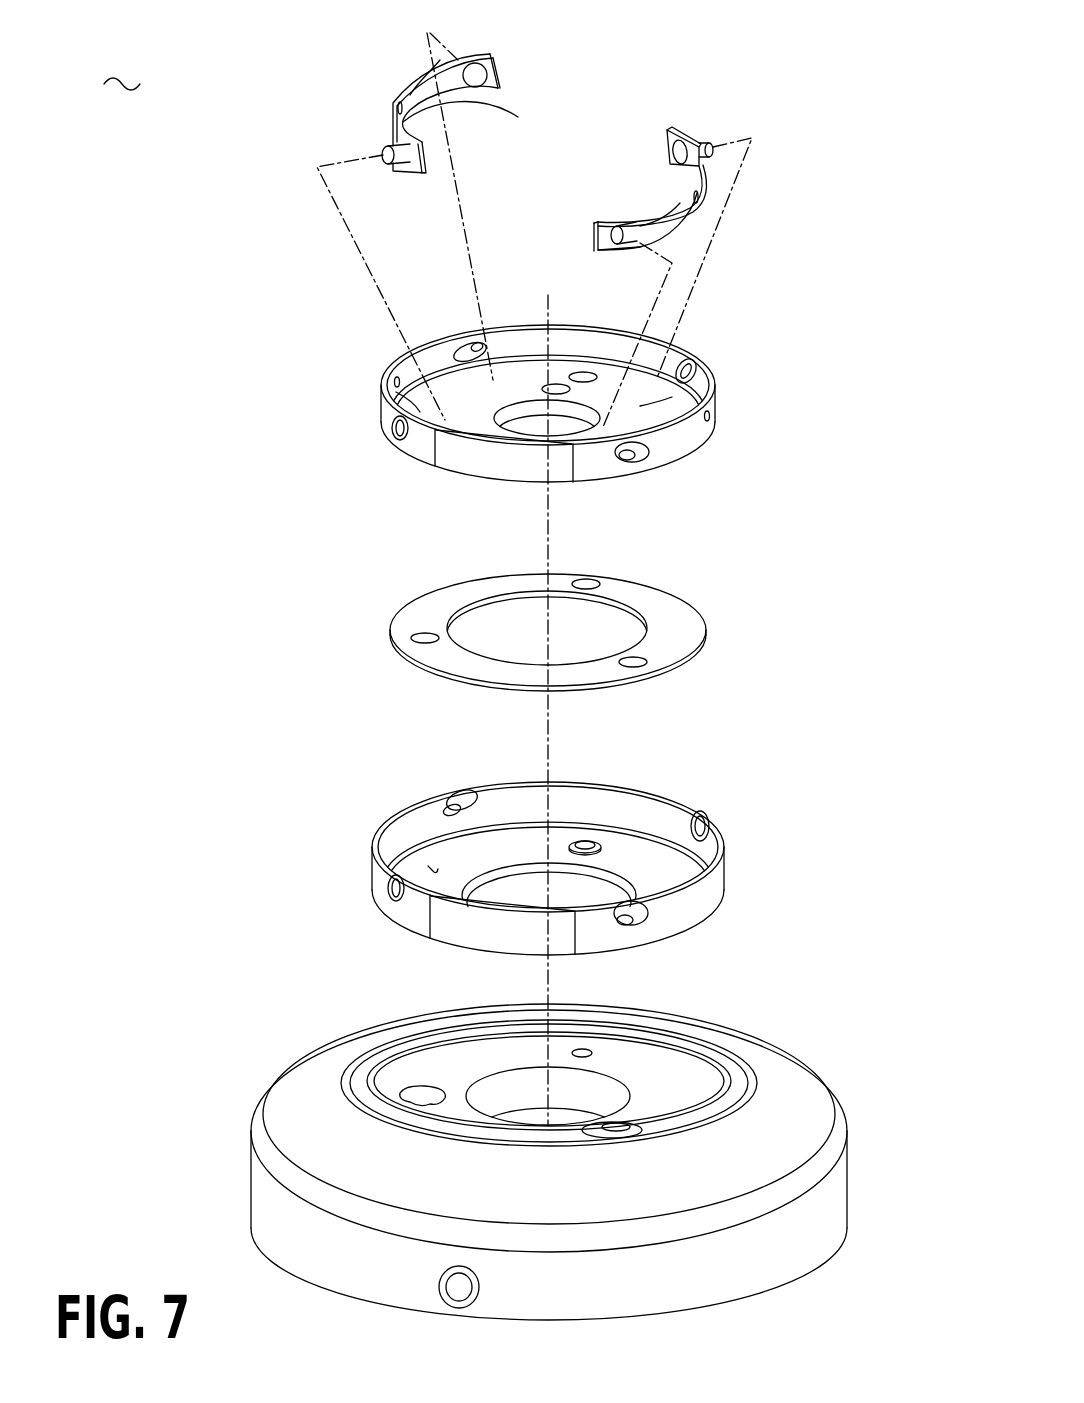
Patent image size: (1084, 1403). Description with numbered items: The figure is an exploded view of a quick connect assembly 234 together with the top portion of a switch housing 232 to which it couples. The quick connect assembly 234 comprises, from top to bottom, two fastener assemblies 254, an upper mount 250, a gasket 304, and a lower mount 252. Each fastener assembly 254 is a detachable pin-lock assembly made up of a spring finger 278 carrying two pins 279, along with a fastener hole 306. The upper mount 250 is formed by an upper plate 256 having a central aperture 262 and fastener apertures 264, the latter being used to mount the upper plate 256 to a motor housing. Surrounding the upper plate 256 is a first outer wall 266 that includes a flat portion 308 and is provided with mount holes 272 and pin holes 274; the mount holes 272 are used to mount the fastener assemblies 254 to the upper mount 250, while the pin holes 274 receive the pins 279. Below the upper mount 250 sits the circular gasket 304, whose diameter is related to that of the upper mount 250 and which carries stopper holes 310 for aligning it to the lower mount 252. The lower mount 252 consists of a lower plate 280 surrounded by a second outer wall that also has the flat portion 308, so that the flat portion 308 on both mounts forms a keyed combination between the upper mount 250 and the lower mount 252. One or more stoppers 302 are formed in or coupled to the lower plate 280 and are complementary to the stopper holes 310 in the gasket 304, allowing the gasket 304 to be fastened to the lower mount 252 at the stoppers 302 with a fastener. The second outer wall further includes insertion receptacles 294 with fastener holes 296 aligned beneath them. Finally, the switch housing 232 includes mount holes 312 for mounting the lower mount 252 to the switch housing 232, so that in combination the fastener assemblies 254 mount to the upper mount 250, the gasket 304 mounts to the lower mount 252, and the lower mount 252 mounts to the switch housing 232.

The quick connect assembly 234 is at (122, 72).
The switch housing 232 is at (828, 1061).
The upper mount 250 is at (783, 344).
The lower mount 252 is at (755, 795).
The fastener assembly 254 is at (366, 68).
The upper plate 256 is at (655, 410).
The central aperture 262 is at (535, 418).
The fastener apertures 264 is at (583, 371).
The first outer wall 266 is at (396, 395).
The mount holes 272 is at (394, 378).
The pin holes 274 is at (462, 344).
The spring finger 278 is at (442, 87).
The pins 279 is at (488, 73).
The lower plate 280 is at (430, 867).
The insertion receptacles 294 is at (462, 792).
The fastener holes 296 is at (450, 810).
The stoppers 302 is at (588, 842).
The gasket 304 is at (757, 581).
The fastener hole 306 is at (396, 108).
The flat portion 308 is at (476, 910).
The stopper holes 310 is at (592, 580).
The mount holes 312 is at (410, 1093).